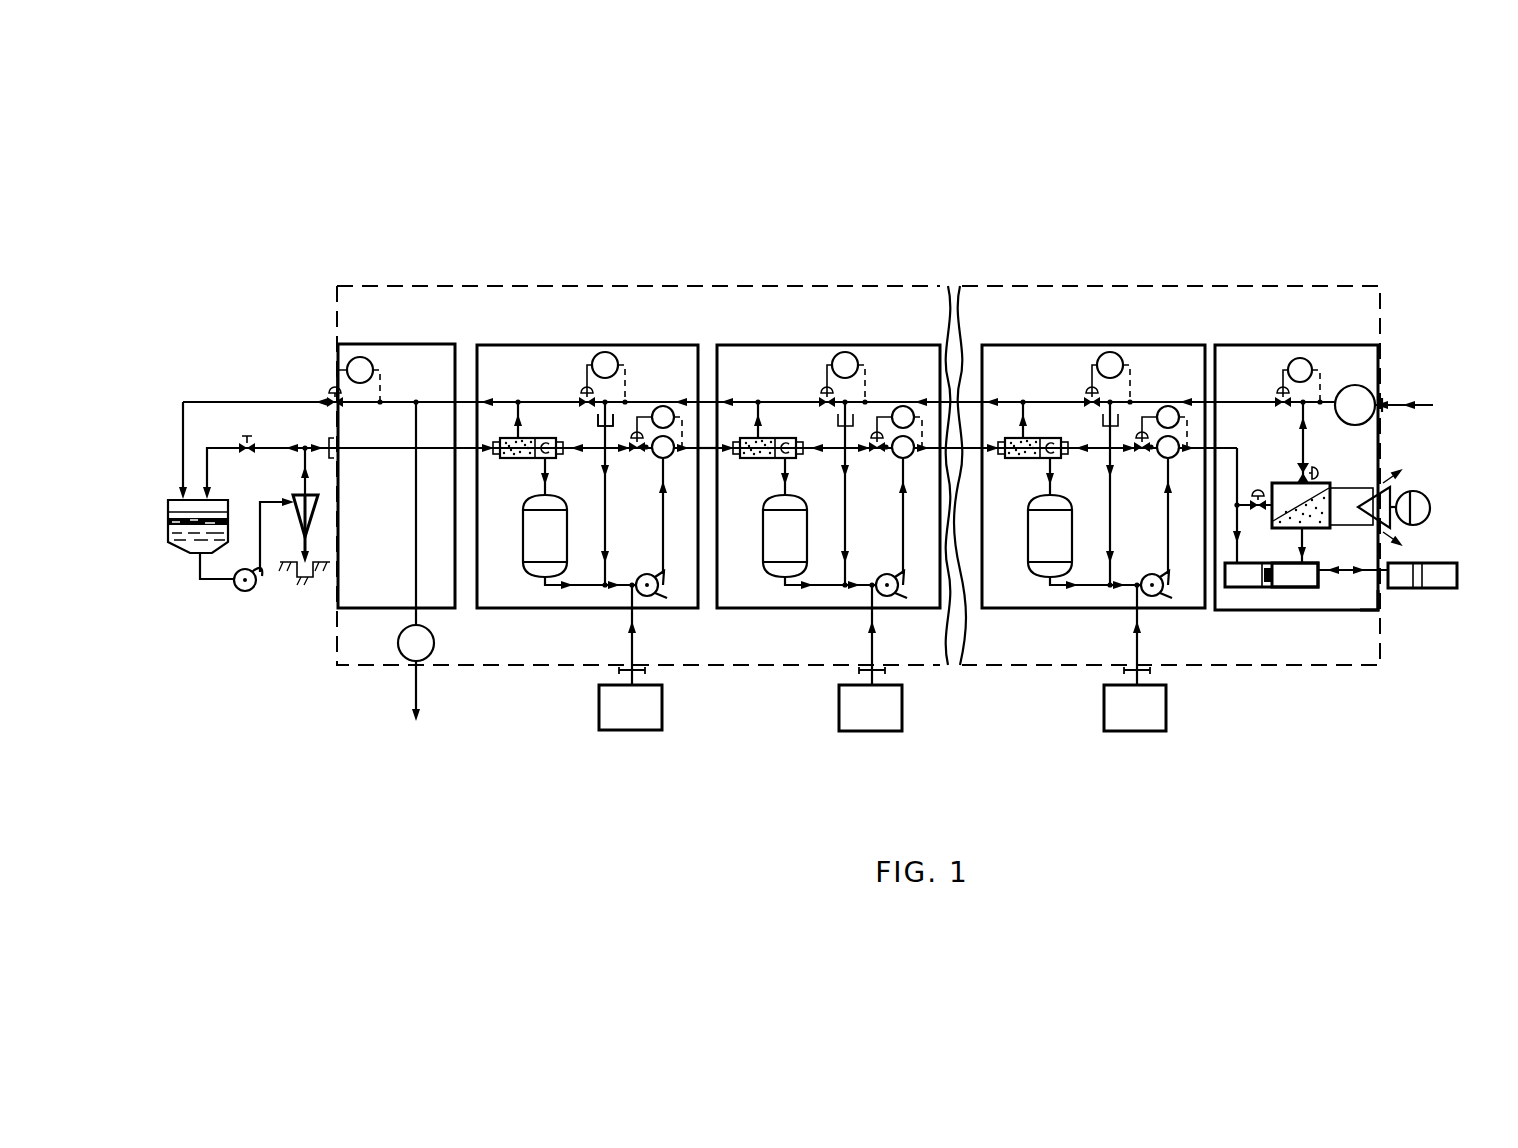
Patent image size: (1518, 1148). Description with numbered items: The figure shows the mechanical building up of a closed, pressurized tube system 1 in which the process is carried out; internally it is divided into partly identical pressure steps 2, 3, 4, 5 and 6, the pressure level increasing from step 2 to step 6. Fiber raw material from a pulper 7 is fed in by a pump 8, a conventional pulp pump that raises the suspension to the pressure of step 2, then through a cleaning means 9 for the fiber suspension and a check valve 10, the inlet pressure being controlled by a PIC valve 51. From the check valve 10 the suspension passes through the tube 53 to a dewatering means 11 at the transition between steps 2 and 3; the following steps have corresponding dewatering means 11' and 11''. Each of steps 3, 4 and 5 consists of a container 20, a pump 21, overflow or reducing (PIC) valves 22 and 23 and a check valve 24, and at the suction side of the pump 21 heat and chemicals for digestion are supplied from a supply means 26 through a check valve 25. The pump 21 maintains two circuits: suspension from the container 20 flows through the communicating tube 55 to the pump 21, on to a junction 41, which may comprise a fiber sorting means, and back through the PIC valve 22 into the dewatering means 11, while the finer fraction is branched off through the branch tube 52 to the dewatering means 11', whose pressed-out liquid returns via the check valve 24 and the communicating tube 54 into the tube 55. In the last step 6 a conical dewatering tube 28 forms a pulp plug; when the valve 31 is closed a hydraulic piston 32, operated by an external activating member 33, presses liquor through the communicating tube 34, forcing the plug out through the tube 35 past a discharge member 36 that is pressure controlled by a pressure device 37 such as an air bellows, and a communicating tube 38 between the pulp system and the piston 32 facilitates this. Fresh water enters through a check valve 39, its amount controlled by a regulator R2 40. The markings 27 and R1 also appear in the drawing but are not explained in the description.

The pressurized tube system 1 is at (376, 282).
The pressure step 2 is at (422, 352).
The pressure step 3 is at (525, 358).
The pressure step 4 is at (733, 358).
The pressure step 5 is at (1002, 358).
The pressure step 6 is at (1240, 358).
The pulper 7 is at (190, 526).
The pump 8 is at (243, 592).
The cleaning means 9 is at (300, 526).
The check valve 10 is at (329, 442).
The dewatering means 11 is at (567, 343).
The dewatering means 11' is at (801, 344).
The filter 11'' is at (1072, 344).
The container 20 is at (530, 556).
The pump 21 is at (658, 596).
The overflow or reducing valve 22 is at (645, 436).
The overflow or reducing valve 23 is at (353, 358).
The check valve 24 is at (613, 416).
The check valve 25 is at (647, 672).
The supply means 26 is at (628, 733).
The control unit 27 is at (1248, 589).
The conically shaped dewatering tube 28 is at (1300, 574).
The valve 31 is at (1308, 468).
The hydraulic piston 32 is at (1270, 589).
The external activating member 33 is at (1450, 584).
The communicating tube 34 is at (1379, 622).
The tube 35 is at (1345, 490).
The discharge member 36 is at (1389, 484).
The controllable pressure device 37 is at (1430, 508).
The communicating tube 38 is at (1235, 552).
The check valve 39 is at (1386, 410).
The regulator 40 is at (1358, 404).
The junction 41 is at (658, 456).
The PIC valve 51 is at (343, 392).
The branch tube 52 is at (705, 451).
The tube 53 is at (403, 451).
The communicating tube 54 is at (598, 586).
The communicating tube 55 is at (605, 572).
The return line R1 is at (403, 656).
The regulator R2 is at (1387, 404).